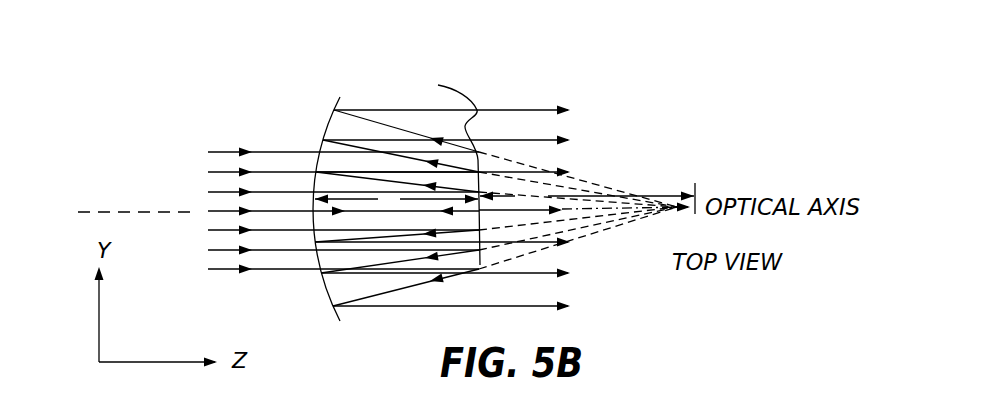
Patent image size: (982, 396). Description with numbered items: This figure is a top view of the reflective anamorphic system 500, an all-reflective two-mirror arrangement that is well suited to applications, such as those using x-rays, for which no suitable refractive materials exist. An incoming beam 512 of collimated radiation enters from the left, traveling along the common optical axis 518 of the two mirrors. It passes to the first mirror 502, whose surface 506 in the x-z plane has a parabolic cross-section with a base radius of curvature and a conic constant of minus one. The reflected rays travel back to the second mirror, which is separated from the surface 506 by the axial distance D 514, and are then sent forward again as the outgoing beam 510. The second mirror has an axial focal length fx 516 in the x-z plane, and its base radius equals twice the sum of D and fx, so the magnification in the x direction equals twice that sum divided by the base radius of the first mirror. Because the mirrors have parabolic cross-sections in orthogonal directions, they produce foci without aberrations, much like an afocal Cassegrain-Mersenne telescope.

The reflective anamorphic system 500 is at (697, 73).
The Mirror 1 502 is at (437, 61).
The surface of Mirror 1 506 is at (479, 256).
The outgoing beam 510 is at (497, 108).
The incoming beam 512 is at (218, 150).
The axial distance D 514 is at (378, 205).
The axial focal length fx 516 is at (541, 193).
The common optical axis 518 is at (150, 198).